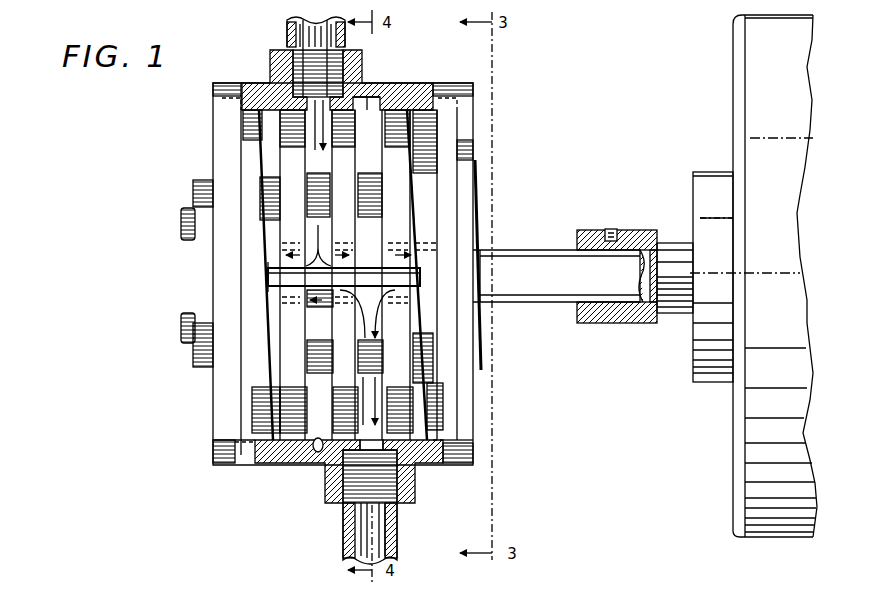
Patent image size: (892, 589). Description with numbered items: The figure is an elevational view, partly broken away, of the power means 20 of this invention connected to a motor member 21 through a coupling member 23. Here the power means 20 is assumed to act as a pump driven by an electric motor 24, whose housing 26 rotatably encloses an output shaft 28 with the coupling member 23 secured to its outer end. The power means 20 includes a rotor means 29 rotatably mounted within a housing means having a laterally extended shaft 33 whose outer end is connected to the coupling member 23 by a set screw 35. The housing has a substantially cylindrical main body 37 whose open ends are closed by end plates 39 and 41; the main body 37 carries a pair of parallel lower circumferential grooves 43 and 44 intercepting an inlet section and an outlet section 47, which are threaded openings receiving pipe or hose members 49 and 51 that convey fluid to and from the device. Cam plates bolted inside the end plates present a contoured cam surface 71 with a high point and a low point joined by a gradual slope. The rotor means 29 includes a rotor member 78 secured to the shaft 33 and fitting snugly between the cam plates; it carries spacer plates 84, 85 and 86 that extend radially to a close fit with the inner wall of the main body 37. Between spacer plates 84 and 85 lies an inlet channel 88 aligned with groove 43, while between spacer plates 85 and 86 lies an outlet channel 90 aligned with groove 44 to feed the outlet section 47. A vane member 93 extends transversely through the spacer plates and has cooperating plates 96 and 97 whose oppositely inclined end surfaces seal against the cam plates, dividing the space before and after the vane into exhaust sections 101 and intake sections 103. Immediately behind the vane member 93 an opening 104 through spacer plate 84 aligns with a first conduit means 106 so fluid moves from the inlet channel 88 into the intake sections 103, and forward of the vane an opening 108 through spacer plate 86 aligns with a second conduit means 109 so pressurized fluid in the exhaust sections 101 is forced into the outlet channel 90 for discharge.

The power means 20 is at (532, 78).
The motor member 21 is at (722, 122).
The coupling member 23 is at (628, 246).
The electric motor 24 is at (777, 520).
The housing 26 is at (712, 382).
The output shaft 28 is at (680, 294).
The rotor means 29 is at (374, 132).
The shaft 33 is at (532, 262).
The set screw 35 is at (614, 230).
The main body 37 is at (284, 462).
The end plate 39 is at (224, 413).
The end plate 41 is at (468, 425).
The circumferential groove 43 is at (318, 446).
The circumferential groove 44 is at (416, 470).
The outlet section 47 is at (410, 504).
The pipe or hose member 49 is at (302, 22).
The pipe or hose member 51 is at (378, 532).
The cam surface 71 is at (258, 140).
The rotor member 78 is at (275, 355).
The spacer plate 84 is at (283, 190).
The spacer plate 85 is at (418, 158).
The spacer plate 86 is at (445, 190).
The inlet channel 88 is at (368, 100).
The outlet channel 90 is at (412, 108).
The vane member 93 is at (300, 288).
The cooperating plate 96 is at (430, 270).
The cooperating plate 97 is at (445, 256).
The exhaust section 101 is at (215, 352).
The intake section 103 is at (425, 248).
The opening 104 is at (268, 280).
The first conduit means 106 is at (400, 232).
The opening 108 is at (438, 398).
The second conduit means 109 is at (300, 333).